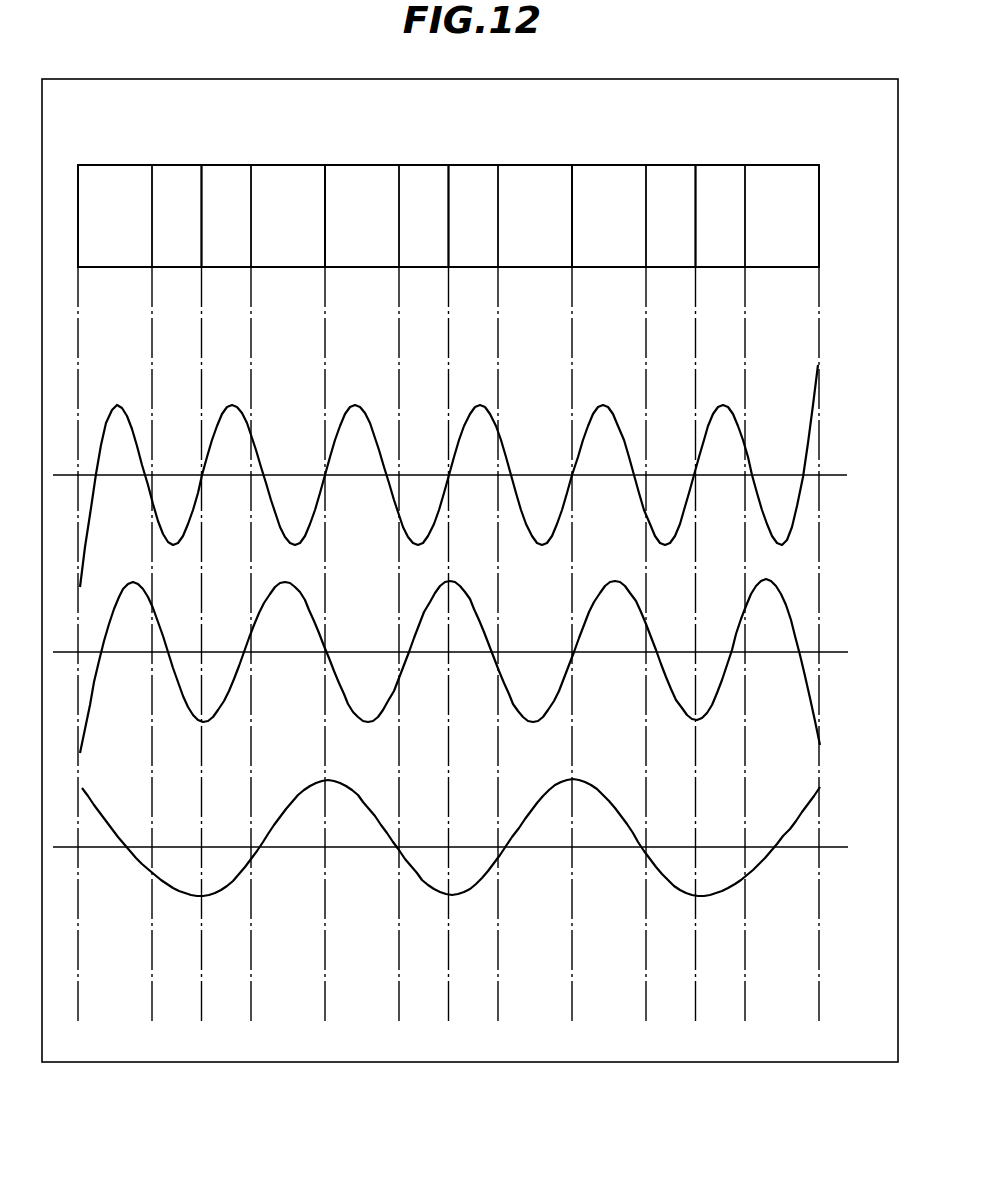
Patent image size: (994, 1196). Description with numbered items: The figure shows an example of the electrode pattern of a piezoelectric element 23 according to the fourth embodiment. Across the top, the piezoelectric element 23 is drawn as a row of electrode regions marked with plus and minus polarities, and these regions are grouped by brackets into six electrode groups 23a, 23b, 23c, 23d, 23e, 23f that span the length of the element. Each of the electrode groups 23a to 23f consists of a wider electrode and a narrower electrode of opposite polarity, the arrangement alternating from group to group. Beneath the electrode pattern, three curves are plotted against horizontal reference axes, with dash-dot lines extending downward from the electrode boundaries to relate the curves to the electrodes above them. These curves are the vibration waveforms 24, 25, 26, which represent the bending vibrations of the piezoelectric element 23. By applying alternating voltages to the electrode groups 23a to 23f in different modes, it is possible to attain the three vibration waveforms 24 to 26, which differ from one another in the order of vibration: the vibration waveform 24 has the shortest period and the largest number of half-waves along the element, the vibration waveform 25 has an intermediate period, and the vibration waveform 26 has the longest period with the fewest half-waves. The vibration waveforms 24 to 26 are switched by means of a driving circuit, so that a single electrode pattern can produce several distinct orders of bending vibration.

The piezoelectric element 23 is at (819, 212).
The electrode group 23a is at (78, 161).
The electrode group 23b is at (325, 161).
The electrode group 23c is at (325, 161).
The electrode group 23d is at (448, 161).
The electrode group 23e is at (572, 161).
The electrode group 23f is at (819, 161).
The vibration waveform 24 is at (810, 440).
The vibration waveform 25 is at (797, 632).
The vibration waveform 26 is at (795, 825).